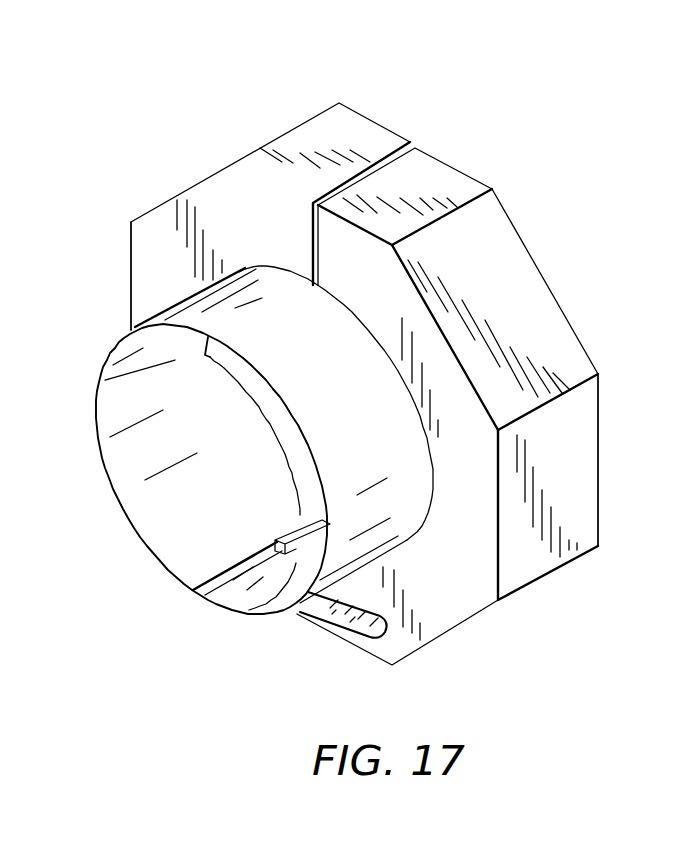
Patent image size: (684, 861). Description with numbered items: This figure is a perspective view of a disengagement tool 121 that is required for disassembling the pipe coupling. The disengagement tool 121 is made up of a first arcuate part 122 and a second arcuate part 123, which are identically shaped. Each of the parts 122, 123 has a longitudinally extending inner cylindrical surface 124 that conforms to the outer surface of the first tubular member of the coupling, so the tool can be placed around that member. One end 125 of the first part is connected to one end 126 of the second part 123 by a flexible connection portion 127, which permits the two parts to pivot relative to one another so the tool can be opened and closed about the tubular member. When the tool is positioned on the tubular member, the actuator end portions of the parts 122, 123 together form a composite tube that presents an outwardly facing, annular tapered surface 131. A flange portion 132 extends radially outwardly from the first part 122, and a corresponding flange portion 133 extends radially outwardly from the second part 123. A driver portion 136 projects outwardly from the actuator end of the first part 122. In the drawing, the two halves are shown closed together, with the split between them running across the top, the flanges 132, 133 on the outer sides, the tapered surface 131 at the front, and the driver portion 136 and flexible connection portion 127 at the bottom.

The disengagement tool 121 is at (405, 100).
The first arcuate part 122 is at (201, 184).
The second arcuate part 123 is at (534, 259).
The inner cylindrical surface 124 is at (138, 501).
The one end of the first part 125 is at (196, 592).
The one end of the second part 126 is at (217, 599).
The flexible connection portion 127 is at (303, 612).
The annular tapered surface 131 is at (284, 426).
The flange portion of the first part 132 is at (131, 263).
The flange portion of the second part 133 is at (598, 497).
The driver portion 136 is at (272, 597).